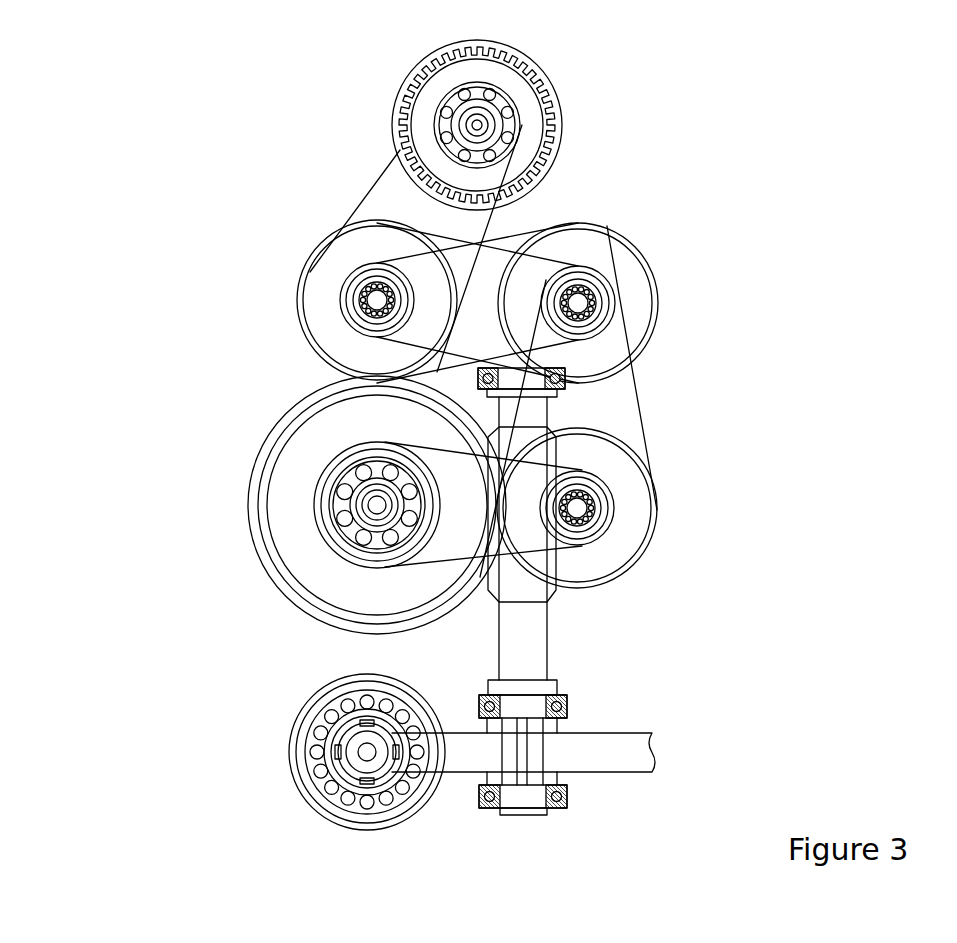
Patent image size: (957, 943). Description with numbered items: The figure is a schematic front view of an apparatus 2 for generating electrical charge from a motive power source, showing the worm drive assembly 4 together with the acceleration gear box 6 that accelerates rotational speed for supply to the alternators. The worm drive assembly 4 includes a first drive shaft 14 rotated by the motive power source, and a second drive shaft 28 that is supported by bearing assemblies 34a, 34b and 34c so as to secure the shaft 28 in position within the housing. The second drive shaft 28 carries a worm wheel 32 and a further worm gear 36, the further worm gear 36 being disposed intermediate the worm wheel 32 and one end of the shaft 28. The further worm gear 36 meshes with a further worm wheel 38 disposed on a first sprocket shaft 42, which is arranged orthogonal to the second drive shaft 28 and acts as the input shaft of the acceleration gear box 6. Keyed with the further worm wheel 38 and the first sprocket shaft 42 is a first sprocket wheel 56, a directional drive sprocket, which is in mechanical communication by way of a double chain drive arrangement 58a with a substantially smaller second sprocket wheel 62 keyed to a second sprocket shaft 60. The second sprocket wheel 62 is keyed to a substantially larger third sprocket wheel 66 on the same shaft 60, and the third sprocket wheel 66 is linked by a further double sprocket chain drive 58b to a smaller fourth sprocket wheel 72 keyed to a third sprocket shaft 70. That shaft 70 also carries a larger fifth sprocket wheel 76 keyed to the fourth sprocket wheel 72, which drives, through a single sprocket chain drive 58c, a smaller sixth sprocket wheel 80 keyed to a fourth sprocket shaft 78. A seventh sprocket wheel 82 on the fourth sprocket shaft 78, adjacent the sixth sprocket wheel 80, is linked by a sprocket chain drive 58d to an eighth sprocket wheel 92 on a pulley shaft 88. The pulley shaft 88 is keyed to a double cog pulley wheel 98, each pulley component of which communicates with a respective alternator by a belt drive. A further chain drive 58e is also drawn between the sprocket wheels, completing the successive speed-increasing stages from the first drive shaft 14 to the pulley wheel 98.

The apparatus 2 is at (752, 108).
The worm drive assembly 4 is at (716, 672).
The acceleration gear box 6 is at (170, 222).
The first drive shaft 14 is at (352, 757).
The second drive shaft 28 is at (536, 634).
The worm wheel 32 is at (627, 745).
The bearing assembly 34a is at (562, 815).
The bearing assembly 34b is at (570, 705).
The bearing assembly 34c is at (566, 393).
The further worm gear 36 is at (507, 580).
The further worm wheel 38 is at (310, 442).
The first sprocket shaft 42 is at (373, 504).
The first sprocket wheel 56 is at (343, 550).
The double chain drive arrangement 58a is at (397, 612).
The double sprocket chain drive 58b is at (637, 387).
The single sprocket chain drive 58c is at (510, 235).
The sprocket chain drive 58d is at (382, 178).
The belt 58e is at (453, 358).
The second sprocket shaft 60 is at (590, 505).
The second sprocket wheel 62 is at (600, 483).
The third sprocket wheel 66 is at (597, 455).
The third sprocket shaft 70 is at (579, 298).
The fourth sprocket wheel 72 is at (603, 300).
The fifth sprocket wheel 76 is at (603, 250).
The fourth sprocket shaft 78 is at (372, 302).
The sixth sprocket wheel 80 is at (357, 313).
The seventh sprocket wheel 82 is at (347, 250).
The pulley shaft 88 is at (480, 123).
The eighth sprocket wheel 92 is at (400, 150).
The double cog pulley wheel 98 is at (448, 80).